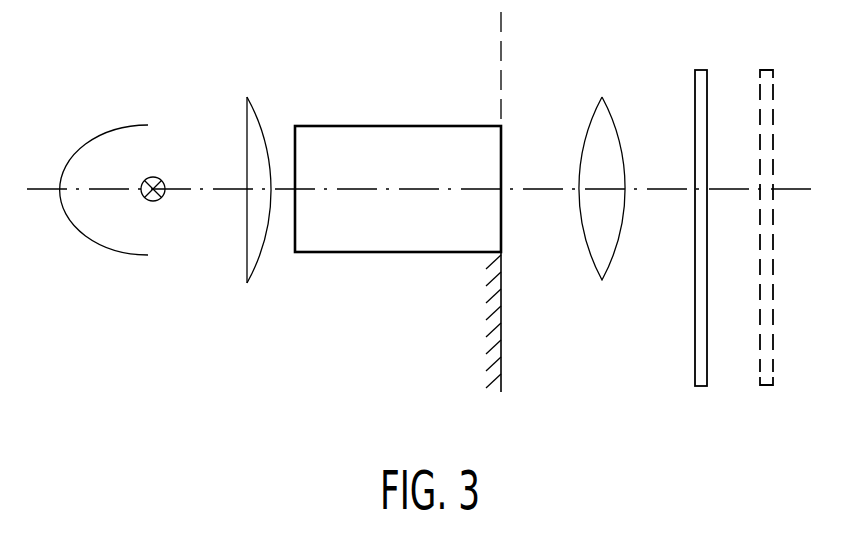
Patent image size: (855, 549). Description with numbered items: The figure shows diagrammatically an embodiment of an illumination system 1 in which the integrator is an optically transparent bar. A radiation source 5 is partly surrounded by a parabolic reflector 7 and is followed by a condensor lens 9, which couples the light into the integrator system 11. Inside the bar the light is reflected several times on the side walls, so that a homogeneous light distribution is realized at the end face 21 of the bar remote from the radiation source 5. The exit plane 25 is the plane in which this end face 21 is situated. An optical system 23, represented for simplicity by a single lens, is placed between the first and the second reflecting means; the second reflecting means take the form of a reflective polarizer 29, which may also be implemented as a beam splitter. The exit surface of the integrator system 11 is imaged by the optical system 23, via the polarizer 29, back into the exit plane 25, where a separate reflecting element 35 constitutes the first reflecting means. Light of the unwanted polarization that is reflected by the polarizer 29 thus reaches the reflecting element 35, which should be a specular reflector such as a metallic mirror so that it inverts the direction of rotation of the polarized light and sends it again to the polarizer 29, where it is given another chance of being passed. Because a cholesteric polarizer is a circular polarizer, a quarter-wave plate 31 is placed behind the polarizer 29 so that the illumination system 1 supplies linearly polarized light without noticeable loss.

The illumination system 1 is at (214, 419).
The radiation source 5 is at (154, 201).
The parabolic reflector 7 is at (138, 256).
The condensor lens 9 is at (252, 260).
The integrator system 11 is at (346, 284).
The end face 21 is at (502, 229).
The optical system 23 is at (604, 265).
The exit plane 25 is at (501, 40).
The reflective polarizer 29 is at (695, 81).
The λ/4 plate 31 is at (768, 363).
The reflecting element 35 is at (502, 346).